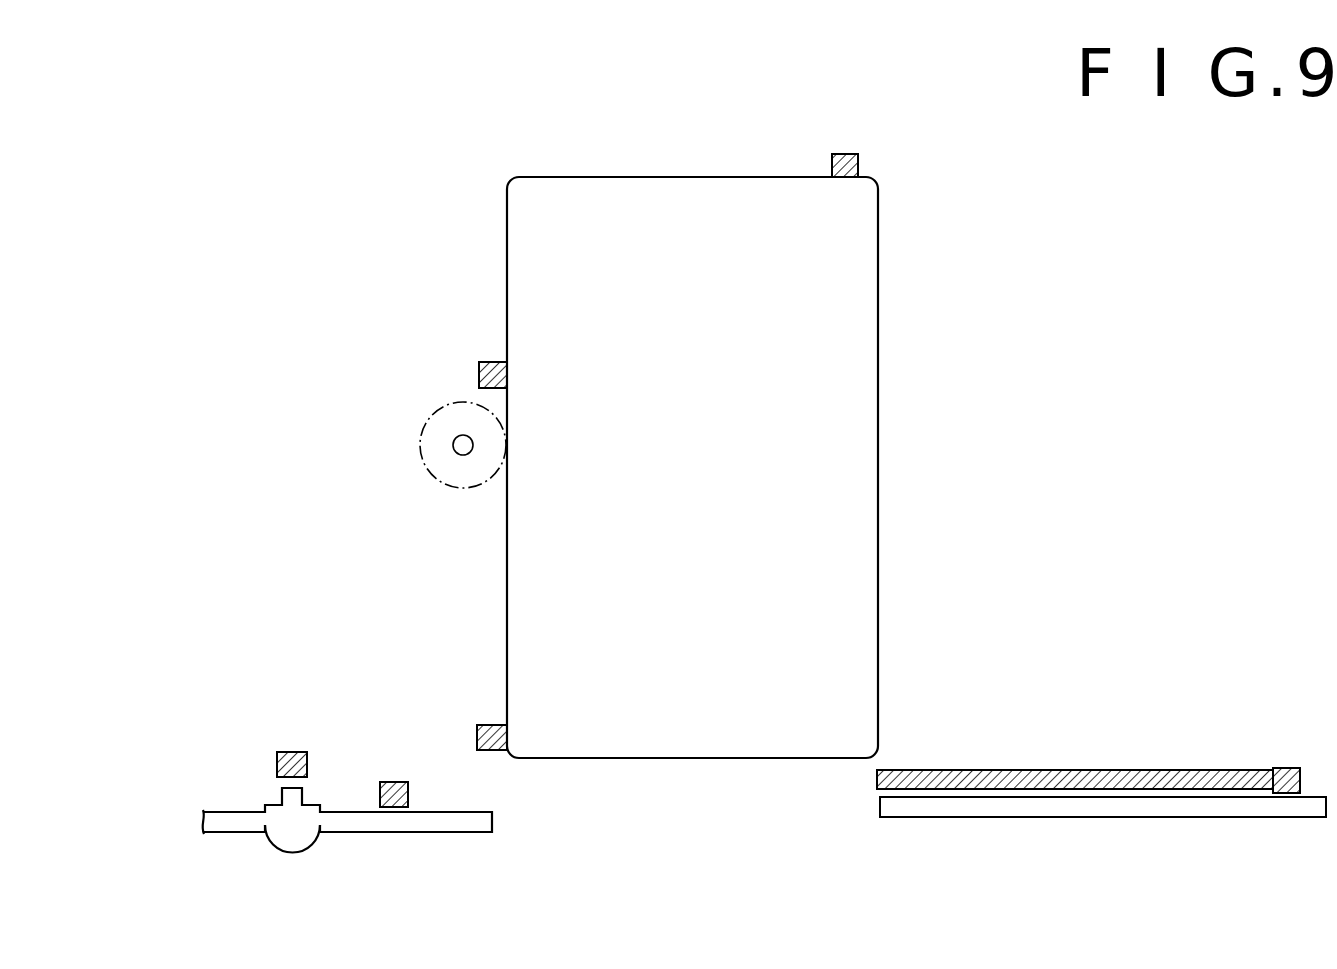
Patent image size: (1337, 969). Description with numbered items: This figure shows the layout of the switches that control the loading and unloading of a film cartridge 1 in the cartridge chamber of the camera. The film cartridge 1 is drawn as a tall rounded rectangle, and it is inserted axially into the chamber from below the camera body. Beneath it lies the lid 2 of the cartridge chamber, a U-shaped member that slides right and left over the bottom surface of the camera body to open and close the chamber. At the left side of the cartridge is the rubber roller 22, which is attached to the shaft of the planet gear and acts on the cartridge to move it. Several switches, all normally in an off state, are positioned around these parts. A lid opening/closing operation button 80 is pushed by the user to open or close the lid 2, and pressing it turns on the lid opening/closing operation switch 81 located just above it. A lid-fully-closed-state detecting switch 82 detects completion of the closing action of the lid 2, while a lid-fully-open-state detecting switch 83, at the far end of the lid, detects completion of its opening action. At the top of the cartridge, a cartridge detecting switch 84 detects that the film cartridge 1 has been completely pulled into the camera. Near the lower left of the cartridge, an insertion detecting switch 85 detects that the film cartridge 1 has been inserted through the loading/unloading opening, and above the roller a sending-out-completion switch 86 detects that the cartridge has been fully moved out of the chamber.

The film cartridge 1 is at (851, 468).
The lid 2 is at (1019, 780).
The roller 22 is at (420, 446).
The lid opening/closing operation button 80 is at (293, 837).
The lid opening/closing operation switch 81 is at (295, 750).
The lid-fully-closed-state detecting switch 82 is at (394, 782).
The lid-fully-open-state detecting switch 83 is at (1291, 768).
The cartridge detecting switch 84 is at (846, 154).
The insertion detecting switch 85 is at (477, 736).
The sending-out-completion switch 86 is at (478, 372).